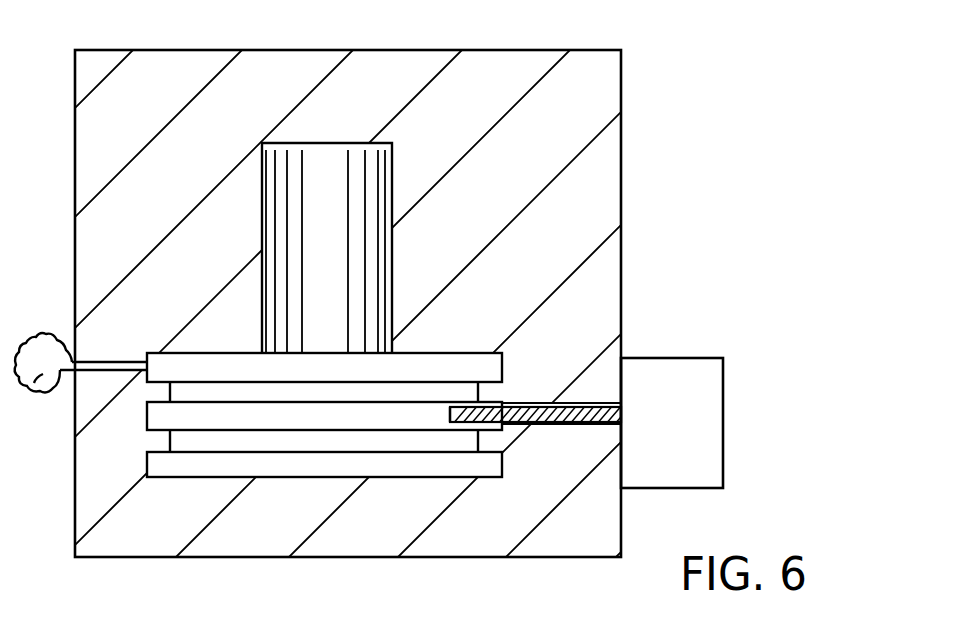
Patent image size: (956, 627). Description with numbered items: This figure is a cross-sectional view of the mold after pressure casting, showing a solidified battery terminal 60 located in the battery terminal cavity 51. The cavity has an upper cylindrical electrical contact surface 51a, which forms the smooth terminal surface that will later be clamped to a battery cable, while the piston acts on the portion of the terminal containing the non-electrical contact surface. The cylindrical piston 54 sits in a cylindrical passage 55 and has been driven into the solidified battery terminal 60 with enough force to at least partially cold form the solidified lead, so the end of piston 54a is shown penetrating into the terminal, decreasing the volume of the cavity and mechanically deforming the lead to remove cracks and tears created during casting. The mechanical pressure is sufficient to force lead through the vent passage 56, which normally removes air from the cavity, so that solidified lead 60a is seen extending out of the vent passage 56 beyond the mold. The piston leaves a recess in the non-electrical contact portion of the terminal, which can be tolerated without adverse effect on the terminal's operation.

The battery terminal cavity 51 is at (393, 163).
The upper cylindrical electrical contact surface 51a is at (393, 240).
The cylindrical piston 54 is at (543, 412).
The end of piston 54a is at (456, 408).
The channel 55 is at (542, 424).
The vent passage 56 is at (108, 361).
The solidified battery terminal 60 is at (333, 175).
The solidified lead 60a is at (32, 392).